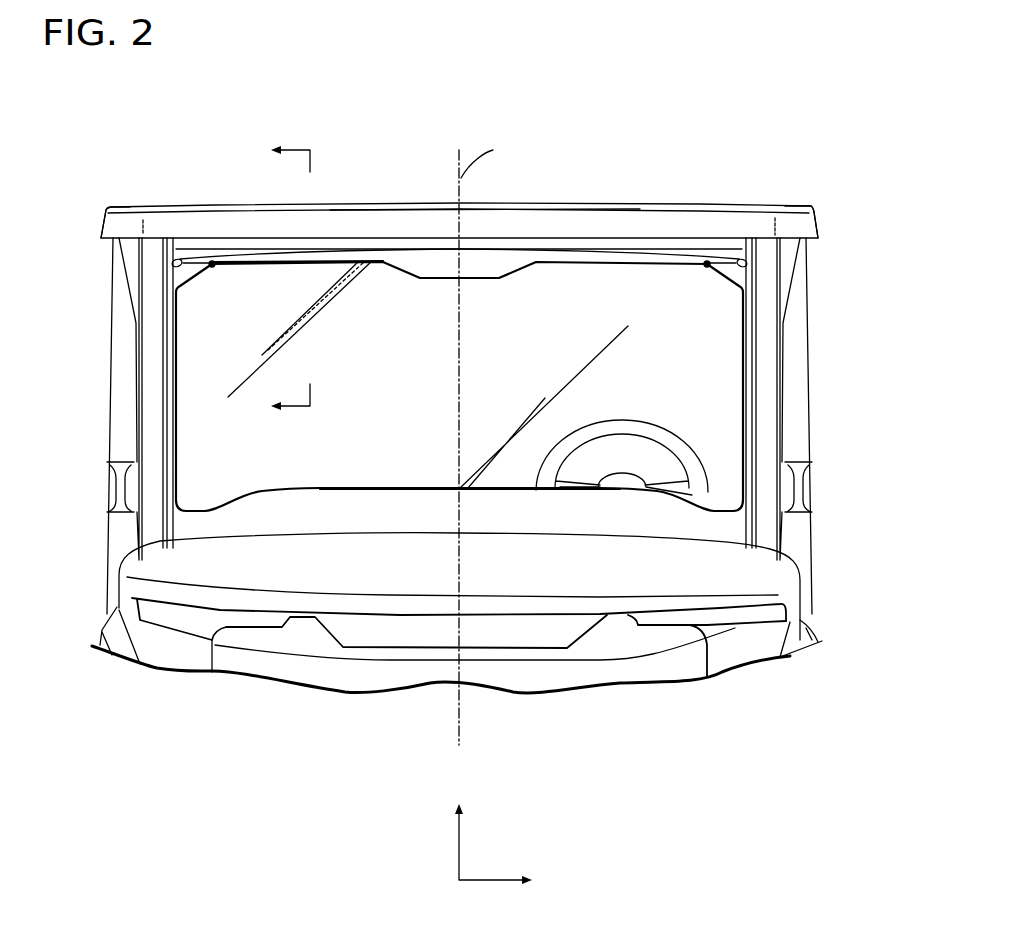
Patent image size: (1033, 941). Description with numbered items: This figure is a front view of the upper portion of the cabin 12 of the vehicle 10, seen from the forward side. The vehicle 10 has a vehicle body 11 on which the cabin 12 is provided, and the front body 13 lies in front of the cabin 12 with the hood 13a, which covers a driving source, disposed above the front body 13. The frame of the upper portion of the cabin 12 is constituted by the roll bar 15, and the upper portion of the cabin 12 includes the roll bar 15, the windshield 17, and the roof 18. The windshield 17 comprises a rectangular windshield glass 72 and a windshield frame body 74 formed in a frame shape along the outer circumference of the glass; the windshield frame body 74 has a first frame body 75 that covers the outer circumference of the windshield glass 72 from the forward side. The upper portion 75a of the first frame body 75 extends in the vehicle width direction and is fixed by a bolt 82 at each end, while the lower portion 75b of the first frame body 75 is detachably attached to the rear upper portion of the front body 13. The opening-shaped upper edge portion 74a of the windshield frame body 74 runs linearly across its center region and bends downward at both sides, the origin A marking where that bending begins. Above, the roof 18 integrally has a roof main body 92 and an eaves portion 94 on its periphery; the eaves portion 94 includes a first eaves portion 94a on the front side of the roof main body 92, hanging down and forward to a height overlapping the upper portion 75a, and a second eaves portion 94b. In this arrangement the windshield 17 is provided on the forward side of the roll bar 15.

The vehicle 10 is at (136, 148).
The vehicle body 11 is at (158, 558).
The cabin 12 is at (210, 213).
The front body 13 is at (814, 605).
The hood 13a is at (735, 576).
The roll bar assembly 15 is at (136, 352).
The windshield 17 is at (887, 260).
The roof 18 is at (600, 103).
The windshield glass 72 is at (712, 322).
The windshield frame body 74 is at (466, 448).
The upper edge portion 74a is at (274, 263).
The first frame body 75 is at (747, 392).
The upper portion 75a is at (333, 244).
The lower portion 75b is at (402, 517).
The bolt 82 is at (172, 264).
The roof main body 92 is at (553, 204).
The eaves portion 94 is at (400, 216).
The first eaves portion 94a is at (635, 216).
The second eaves portion 94b is at (101, 230).
The origin A is at (213, 268).